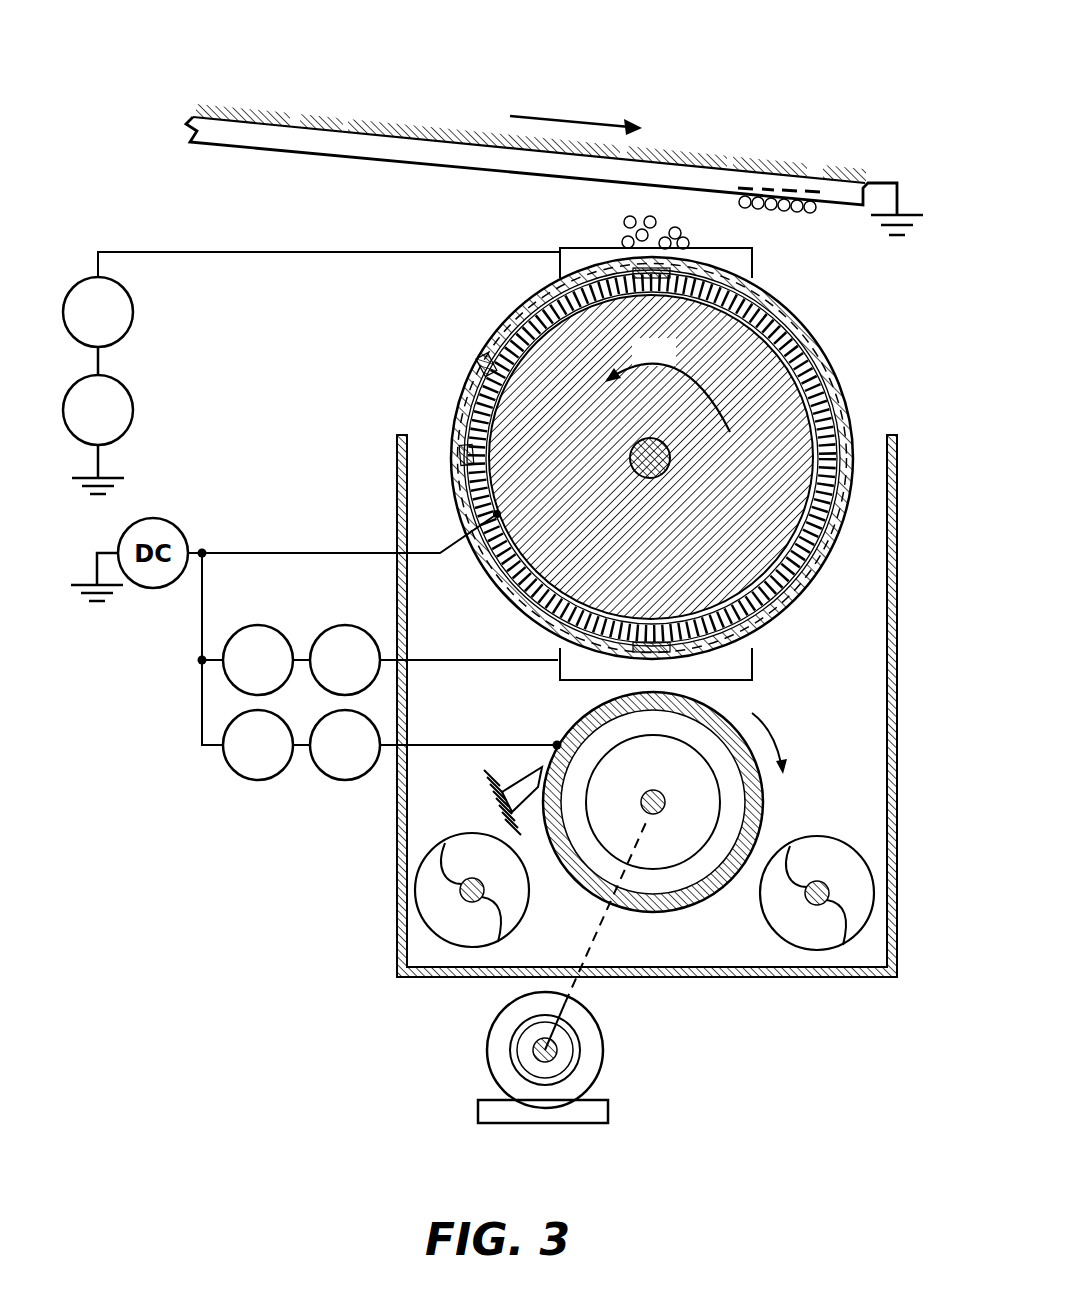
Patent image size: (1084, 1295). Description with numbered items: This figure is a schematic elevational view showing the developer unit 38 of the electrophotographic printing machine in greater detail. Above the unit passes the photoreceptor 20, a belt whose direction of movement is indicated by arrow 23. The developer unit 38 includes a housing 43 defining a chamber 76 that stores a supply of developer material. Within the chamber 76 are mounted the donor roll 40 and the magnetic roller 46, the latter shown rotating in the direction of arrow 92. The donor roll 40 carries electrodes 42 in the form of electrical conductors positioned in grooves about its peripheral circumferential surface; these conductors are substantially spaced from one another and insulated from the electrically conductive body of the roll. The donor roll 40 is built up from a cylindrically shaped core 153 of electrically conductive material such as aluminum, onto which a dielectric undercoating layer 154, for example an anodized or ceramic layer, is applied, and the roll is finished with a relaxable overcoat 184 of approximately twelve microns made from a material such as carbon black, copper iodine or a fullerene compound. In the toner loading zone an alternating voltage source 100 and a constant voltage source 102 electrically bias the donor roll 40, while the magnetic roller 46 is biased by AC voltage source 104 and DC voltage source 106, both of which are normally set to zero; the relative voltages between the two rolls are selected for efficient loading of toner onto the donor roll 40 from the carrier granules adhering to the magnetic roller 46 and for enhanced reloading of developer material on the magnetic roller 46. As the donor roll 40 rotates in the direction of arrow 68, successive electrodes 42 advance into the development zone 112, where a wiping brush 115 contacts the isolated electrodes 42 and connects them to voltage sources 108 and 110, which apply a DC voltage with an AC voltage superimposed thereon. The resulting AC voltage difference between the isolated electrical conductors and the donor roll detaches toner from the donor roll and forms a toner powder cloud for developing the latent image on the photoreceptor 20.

The photoreceptor 20 is at (388, 100).
The arrow 23 is at (590, 121).
The developer unit 38 is at (368, 886).
The donor roll 40 is at (668, 458).
The electrodes 42 is at (457, 447).
The housing 43 is at (650, 982).
The magnetic roller 46 is at (764, 810).
The arrow 68 is at (651, 457).
The chamber 76 is at (712, 934).
The arrow 92 is at (777, 733).
The alternating voltage source 100 is at (252, 624).
The constant voltage source 102 is at (345, 624).
The AC voltage source 104 is at (252, 771).
The DC voltage source 106 is at (350, 771).
The voltage source 108 is at (127, 413).
The voltage source 110 is at (127, 315).
The development zone 112 is at (708, 232).
The wiping brush 115 is at (732, 260).
The core 153 is at (770, 388).
The dielectric undercoating layer 154 is at (857, 427).
The relaxable overcoat 184 is at (800, 317).